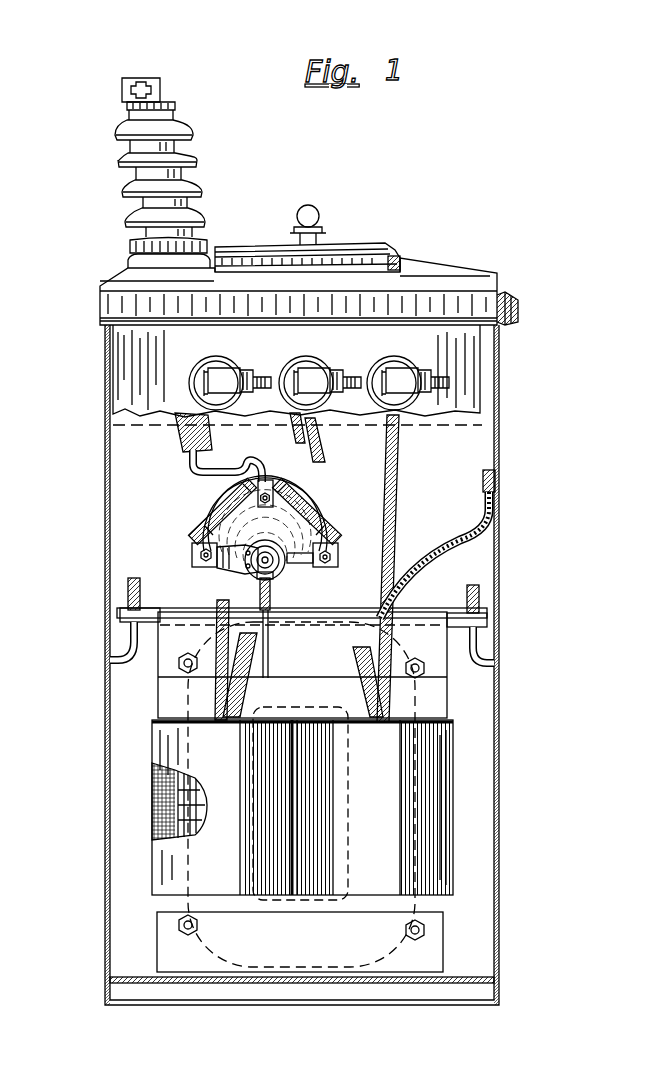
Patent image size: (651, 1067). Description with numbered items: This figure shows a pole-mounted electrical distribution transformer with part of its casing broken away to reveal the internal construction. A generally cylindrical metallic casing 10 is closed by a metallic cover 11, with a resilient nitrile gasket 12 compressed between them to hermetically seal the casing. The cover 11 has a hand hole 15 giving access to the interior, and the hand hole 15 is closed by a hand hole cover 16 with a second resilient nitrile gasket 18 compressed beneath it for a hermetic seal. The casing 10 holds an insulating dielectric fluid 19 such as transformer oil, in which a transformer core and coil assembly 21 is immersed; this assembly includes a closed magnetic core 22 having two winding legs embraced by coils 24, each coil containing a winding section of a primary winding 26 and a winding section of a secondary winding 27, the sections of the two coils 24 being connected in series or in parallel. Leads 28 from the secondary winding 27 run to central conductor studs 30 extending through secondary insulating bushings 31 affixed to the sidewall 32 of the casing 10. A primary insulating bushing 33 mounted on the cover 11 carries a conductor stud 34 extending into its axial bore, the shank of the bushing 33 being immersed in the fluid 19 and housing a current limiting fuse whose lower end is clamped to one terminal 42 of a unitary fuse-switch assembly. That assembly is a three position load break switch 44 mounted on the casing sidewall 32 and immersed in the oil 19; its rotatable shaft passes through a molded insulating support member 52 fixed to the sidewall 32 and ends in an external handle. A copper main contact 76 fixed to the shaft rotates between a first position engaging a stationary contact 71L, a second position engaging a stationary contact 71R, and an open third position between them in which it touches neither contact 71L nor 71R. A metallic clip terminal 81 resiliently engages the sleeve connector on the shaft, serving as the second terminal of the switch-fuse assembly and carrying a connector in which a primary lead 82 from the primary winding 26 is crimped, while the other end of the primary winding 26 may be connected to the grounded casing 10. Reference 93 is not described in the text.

The casing 10 is at (103, 566).
The cover 11 is at (447, 273).
The resilient nitrile gasket 12 is at (513, 294).
The hand hole 15 is at (368, 266).
The hand hole cover 16 is at (329, 243).
The resilient nitrile gasket 18 is at (398, 257).
The insulating dielectric fluid 19 is at (493, 421).
The transformer core and coil assembly 21 is at (462, 773).
The closed magnetic core 22 is at (302, 955).
The coils 24 is at (168, 868).
The primary winding 26 is at (162, 805).
The secondary winding 27 is at (188, 803).
The leads 28 is at (290, 434).
The central conductor studs 30 is at (228, 380).
The secondary insulating bushings 31 is at (194, 364).
The sidewall 32 is at (112, 447).
The primary insulating bushing 33 is at (125, 158).
The conductor stud 34 is at (122, 92).
The terminal 42 is at (281, 471).
The three position load break switch 44 is at (238, 528).
The molded insulating support member 52 is at (292, 572).
The stationary contact 71L is at (203, 569).
The stationary contact 71R is at (318, 570).
The main contact 76 is at (252, 556).
The metallic clip terminal 81 is at (269, 582).
The primary lead 82 is at (260, 585).
The fuse tube arms 93 is at (230, 503).